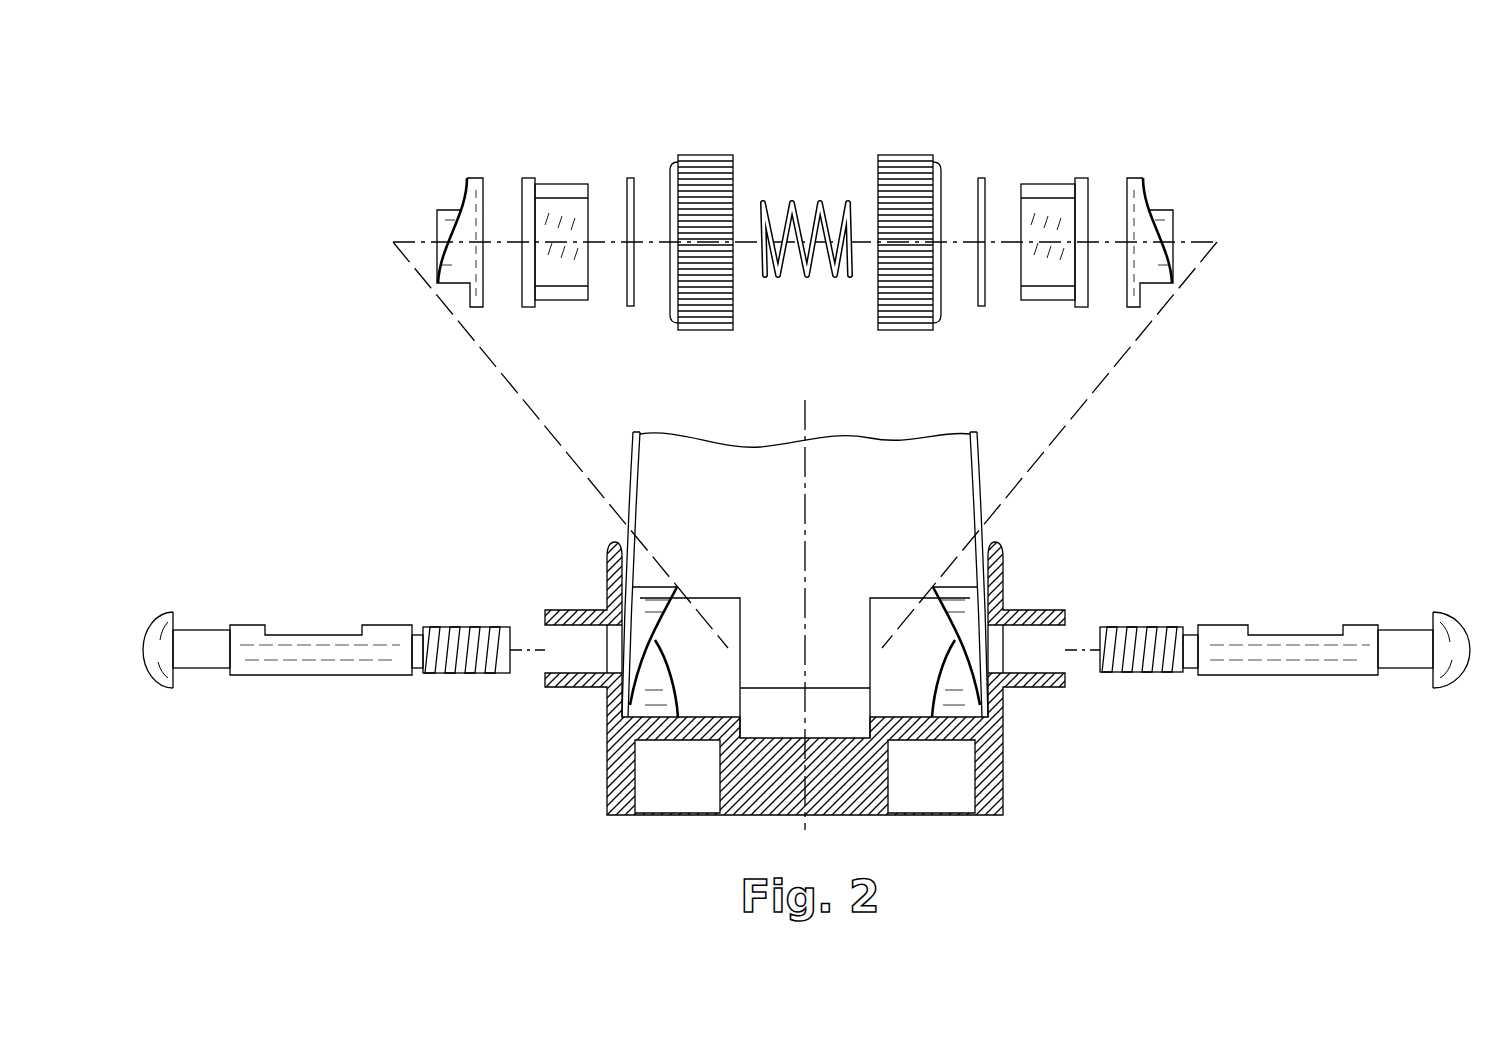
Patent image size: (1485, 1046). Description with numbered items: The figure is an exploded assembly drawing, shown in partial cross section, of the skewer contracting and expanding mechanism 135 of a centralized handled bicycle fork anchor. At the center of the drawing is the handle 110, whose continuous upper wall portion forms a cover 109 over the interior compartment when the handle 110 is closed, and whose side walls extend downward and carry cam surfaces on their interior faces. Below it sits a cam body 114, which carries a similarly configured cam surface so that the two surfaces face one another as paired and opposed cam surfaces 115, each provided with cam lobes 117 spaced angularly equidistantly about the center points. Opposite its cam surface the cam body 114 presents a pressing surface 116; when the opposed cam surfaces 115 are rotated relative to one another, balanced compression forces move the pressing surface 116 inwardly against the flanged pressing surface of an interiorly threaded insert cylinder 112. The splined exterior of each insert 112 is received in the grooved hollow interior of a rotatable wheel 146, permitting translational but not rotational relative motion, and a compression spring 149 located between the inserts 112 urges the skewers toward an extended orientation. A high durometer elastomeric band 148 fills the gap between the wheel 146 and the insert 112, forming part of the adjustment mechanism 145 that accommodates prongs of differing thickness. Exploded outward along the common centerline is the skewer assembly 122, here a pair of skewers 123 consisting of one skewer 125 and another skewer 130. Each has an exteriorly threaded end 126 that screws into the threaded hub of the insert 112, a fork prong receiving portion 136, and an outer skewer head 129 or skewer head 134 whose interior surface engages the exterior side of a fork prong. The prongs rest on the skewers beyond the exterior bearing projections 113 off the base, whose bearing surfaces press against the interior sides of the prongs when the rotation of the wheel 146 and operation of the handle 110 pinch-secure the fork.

The cover 109 is at (832, 499).
The handle 110 is at (765, 440).
The interiorly threaded insert cylinder 112 is at (560, 187).
The exterior bearing projections 113 is at (574, 688).
The cam body 114 is at (475, 178).
The opposed cam surfaces 115 is at (445, 238).
The pressing surface 116 is at (486, 195).
The cam lobes 117 is at (448, 227).
The skewer assembly 122 is at (1329, 611).
The pair of skewers 123 is at (1280, 611).
The skewer 125 is at (313, 675).
The exteriorly threaded end 126 is at (458, 628).
The skewer head 129 is at (178, 618).
The skewer 130 is at (1305, 675).
The skewer head 134 is at (1433, 622).
The skewer contracting and expanding mechanism 135 is at (792, 217).
The fork prong receiving portion 136 is at (203, 668).
The adjustment mechanism 145 is at (485, 372).
The rotatable wheel 146 is at (705, 153).
The elastomeric band 148 is at (630, 310).
The compression spring 149 is at (805, 277).